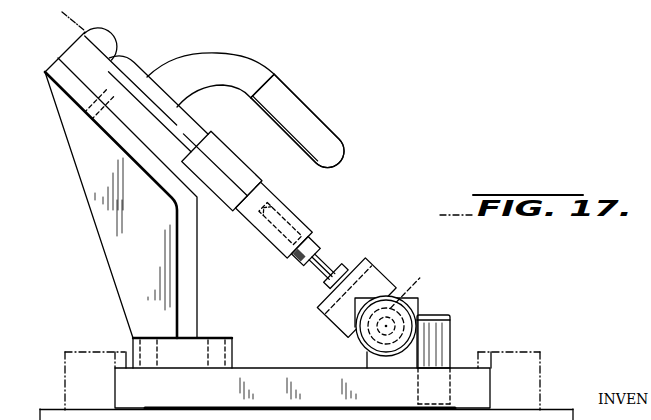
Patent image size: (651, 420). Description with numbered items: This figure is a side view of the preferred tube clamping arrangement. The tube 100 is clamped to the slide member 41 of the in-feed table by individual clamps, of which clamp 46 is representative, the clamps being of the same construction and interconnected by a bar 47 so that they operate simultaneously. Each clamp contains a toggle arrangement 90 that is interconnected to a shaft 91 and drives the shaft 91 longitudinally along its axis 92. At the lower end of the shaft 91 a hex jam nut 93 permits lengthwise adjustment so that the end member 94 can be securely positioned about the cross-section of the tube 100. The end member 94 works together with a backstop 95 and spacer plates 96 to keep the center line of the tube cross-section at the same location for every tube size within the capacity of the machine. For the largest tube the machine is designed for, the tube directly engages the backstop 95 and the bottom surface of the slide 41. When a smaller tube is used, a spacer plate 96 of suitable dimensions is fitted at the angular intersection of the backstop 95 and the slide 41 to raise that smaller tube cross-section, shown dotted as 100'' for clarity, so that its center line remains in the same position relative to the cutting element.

The slide member 41 is at (283, 371).
The clamp 46 is at (318, 96).
The bar 47 is at (320, 94).
The toggle arrangement 90 is at (243, 58).
The shaft 91 is at (296, 219).
The axis 92 is at (239, 157).
The hex jam nut 93 is at (318, 248).
The end member 94 is at (367, 257).
The backstop 95 is at (452, 326).
The spacer plate 96 is at (405, 363).
The tube 100 is at (408, 322).
The roller alternate position 100'' is at (422, 283).